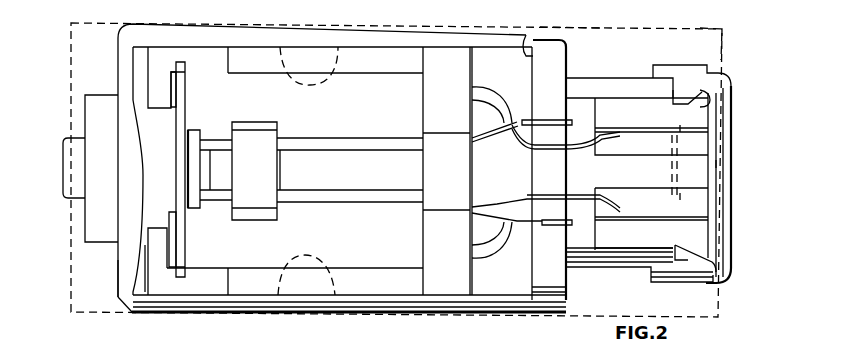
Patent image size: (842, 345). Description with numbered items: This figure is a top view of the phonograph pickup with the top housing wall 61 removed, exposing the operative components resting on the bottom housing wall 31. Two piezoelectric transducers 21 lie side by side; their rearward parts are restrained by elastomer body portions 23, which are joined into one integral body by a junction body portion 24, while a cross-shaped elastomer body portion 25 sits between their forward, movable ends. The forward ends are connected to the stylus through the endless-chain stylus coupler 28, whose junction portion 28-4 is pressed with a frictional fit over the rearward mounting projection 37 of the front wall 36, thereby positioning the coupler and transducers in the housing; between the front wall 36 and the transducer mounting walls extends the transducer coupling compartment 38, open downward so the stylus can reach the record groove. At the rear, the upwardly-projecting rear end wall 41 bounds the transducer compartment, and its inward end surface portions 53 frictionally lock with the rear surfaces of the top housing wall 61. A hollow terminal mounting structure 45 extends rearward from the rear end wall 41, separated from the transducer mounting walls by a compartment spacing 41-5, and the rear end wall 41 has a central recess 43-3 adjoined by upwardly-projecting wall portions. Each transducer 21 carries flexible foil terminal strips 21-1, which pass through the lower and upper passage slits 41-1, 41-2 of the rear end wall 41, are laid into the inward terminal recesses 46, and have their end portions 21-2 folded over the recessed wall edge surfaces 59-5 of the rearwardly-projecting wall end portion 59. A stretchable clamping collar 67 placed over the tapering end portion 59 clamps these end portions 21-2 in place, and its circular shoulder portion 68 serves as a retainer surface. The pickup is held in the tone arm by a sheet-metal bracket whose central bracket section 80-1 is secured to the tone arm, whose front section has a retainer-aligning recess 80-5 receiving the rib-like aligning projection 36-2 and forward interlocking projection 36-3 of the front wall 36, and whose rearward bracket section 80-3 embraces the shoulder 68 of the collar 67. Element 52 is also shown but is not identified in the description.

The retainer-aligning recess 80-5 is at (63, 78).
The central bracket section 80-1 is at (600, 30).
The rearward bracket section 80-3 is at (721, 55).
The front wall 36 is at (137, 60).
The mounting boss 52 is at (113, 80).
The forward interlocking and aligning projection 36-3 is at (65, 197).
The rib-like aligning projection 36-2 is at (98, 227).
The stylus coupler 28 is at (181, 62).
The junction portion 28-4 is at (184, 110).
The rearward mounting projection 37 is at (216, 114).
The transducer coupling compartment 38 is at (210, 180).
The cross-shaped elastomer body portion 25 is at (245, 215).
The junction body portion 24 is at (430, 178).
The piezoelectric transducer 21 is at (346, 121).
The bottom housing wall 31 is at (288, 12).
The elastomer body portion 23 is at (432, 242).
The end surface portion 53 is at (533, 43).
The rear end wall 41 is at (550, 68).
The hollow terminal mounting structure 45 is at (626, 79).
The clamping collar 67 is at (688, 64).
The circular shoulder portion 68 is at (714, 73).
The rearwardly-projecting wall end portion 59 is at (700, 103).
The terminal strip 21-1 is at (478, 96).
The lower passage slit 41-1 is at (545, 120).
The upper passage slit 41-2 is at (536, 140).
The end portion of terminal strip 21-2 is at (680, 130).
The terminal recess 46 is at (652, 190).
The recessed wall edge surface 59-5 is at (680, 163).
The central recess 43-3 is at (572, 233).
The compartment spacing 41-5 is at (497, 287).
The top housing wall 61 is at (507, 328).